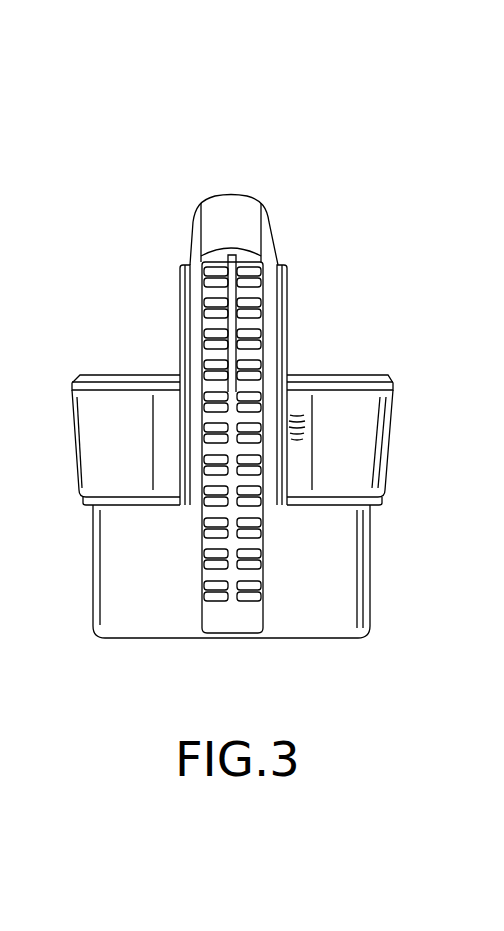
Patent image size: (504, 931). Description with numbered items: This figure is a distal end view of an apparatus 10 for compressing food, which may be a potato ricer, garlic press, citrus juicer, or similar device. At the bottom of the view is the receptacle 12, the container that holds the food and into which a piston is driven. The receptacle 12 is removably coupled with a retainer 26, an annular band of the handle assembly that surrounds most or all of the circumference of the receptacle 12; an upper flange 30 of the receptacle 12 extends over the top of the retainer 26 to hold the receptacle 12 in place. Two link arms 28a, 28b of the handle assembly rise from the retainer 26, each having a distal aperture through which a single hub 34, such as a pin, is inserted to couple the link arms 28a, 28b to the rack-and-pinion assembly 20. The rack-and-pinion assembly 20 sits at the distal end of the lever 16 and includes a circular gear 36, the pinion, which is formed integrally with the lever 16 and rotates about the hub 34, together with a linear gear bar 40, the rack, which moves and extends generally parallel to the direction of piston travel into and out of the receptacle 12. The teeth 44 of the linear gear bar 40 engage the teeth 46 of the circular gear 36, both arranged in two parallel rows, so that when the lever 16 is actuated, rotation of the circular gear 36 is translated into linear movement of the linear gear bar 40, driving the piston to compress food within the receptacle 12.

The apparatus 10 is at (224, 118).
The receptacle 12 is at (352, 548).
The lever 16 is at (248, 213).
The rack-and-pinion assembly 20 is at (117, 256).
The retainer 26 is at (367, 433).
The link arm 28a is at (273, 352).
The link arm 28b is at (190, 355).
The upper flange 30 is at (388, 378).
The hub 34 is at (288, 312).
The circular gear 36 is at (267, 272).
The linear gear bar 40 is at (212, 578).
The teeth of the linear gear bar 44 is at (205, 546).
The teeth of the circular gear 46 is at (198, 325).